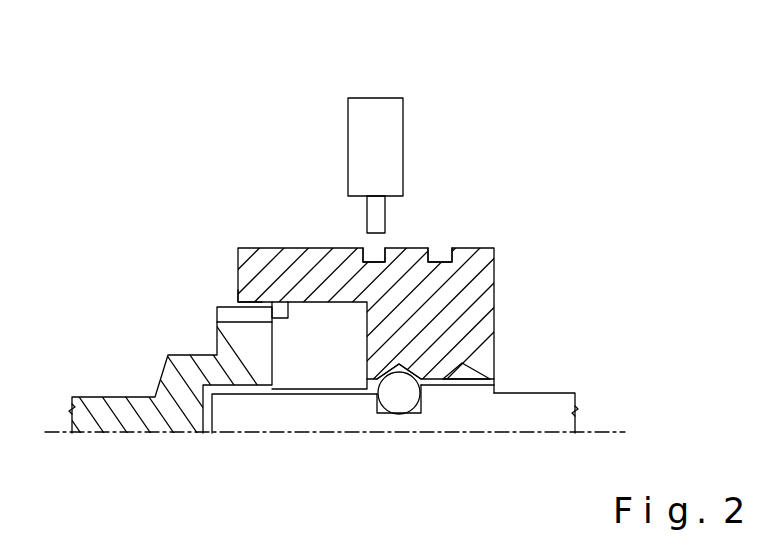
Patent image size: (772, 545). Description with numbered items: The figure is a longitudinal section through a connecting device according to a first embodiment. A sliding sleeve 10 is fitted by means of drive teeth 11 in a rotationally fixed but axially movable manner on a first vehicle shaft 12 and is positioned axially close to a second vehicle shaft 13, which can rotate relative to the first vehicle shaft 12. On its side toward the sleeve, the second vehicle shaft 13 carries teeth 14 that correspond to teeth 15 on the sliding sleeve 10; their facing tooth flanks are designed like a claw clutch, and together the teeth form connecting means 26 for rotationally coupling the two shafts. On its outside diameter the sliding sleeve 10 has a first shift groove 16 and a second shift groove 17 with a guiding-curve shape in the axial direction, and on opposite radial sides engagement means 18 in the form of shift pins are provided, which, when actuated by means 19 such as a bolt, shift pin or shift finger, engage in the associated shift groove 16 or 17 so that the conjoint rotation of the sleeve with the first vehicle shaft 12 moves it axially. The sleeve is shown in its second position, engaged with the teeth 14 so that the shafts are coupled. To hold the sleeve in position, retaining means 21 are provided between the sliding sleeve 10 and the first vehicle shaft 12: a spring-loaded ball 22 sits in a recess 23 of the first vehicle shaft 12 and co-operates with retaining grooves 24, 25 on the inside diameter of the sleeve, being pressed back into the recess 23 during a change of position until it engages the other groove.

The sliding sleeve 10 is at (467, 270).
The drive teeth 11 is at (470, 380).
The first vehicle shaft 12 is at (462, 408).
The second vehicle shaft 13 is at (125, 413).
The teeth 14 is at (223, 315).
The teeth 15 is at (280, 302).
The first shift groove 16 is at (372, 217).
The second shift groove 17 is at (442, 247).
The engagement means 18 is at (375, 118).
The means 19 is at (373, 247).
The retaining means 21 is at (368, 413).
The spring-loaded ball 22 is at (405, 410).
The recess 23 is at (402, 398).
The retaining groove 24 is at (400, 368).
The retaining groove 25 is at (443, 379).
The connecting means 26 is at (233, 295).